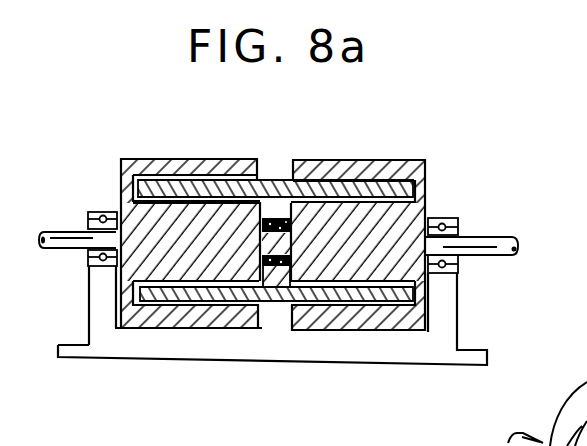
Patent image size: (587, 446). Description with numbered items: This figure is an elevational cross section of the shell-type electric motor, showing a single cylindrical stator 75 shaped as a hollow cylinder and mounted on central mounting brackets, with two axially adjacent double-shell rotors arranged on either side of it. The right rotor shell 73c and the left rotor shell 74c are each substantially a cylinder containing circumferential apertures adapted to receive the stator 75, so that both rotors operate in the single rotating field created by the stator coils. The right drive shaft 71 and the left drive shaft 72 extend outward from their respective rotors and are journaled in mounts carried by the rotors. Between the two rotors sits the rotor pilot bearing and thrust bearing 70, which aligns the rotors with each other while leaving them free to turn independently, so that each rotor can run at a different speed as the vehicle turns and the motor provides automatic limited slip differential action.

The rotor pilot bearing and thrust bearing 70 is at (277, 258).
The right drive shaft 71 is at (487, 247).
The left drive shaft 72 is at (63, 236).
The second housing (stator yoke) 73c is at (355, 160).
The first housing (stator yoke) 74c is at (183, 168).
The stator 75 is at (272, 179).